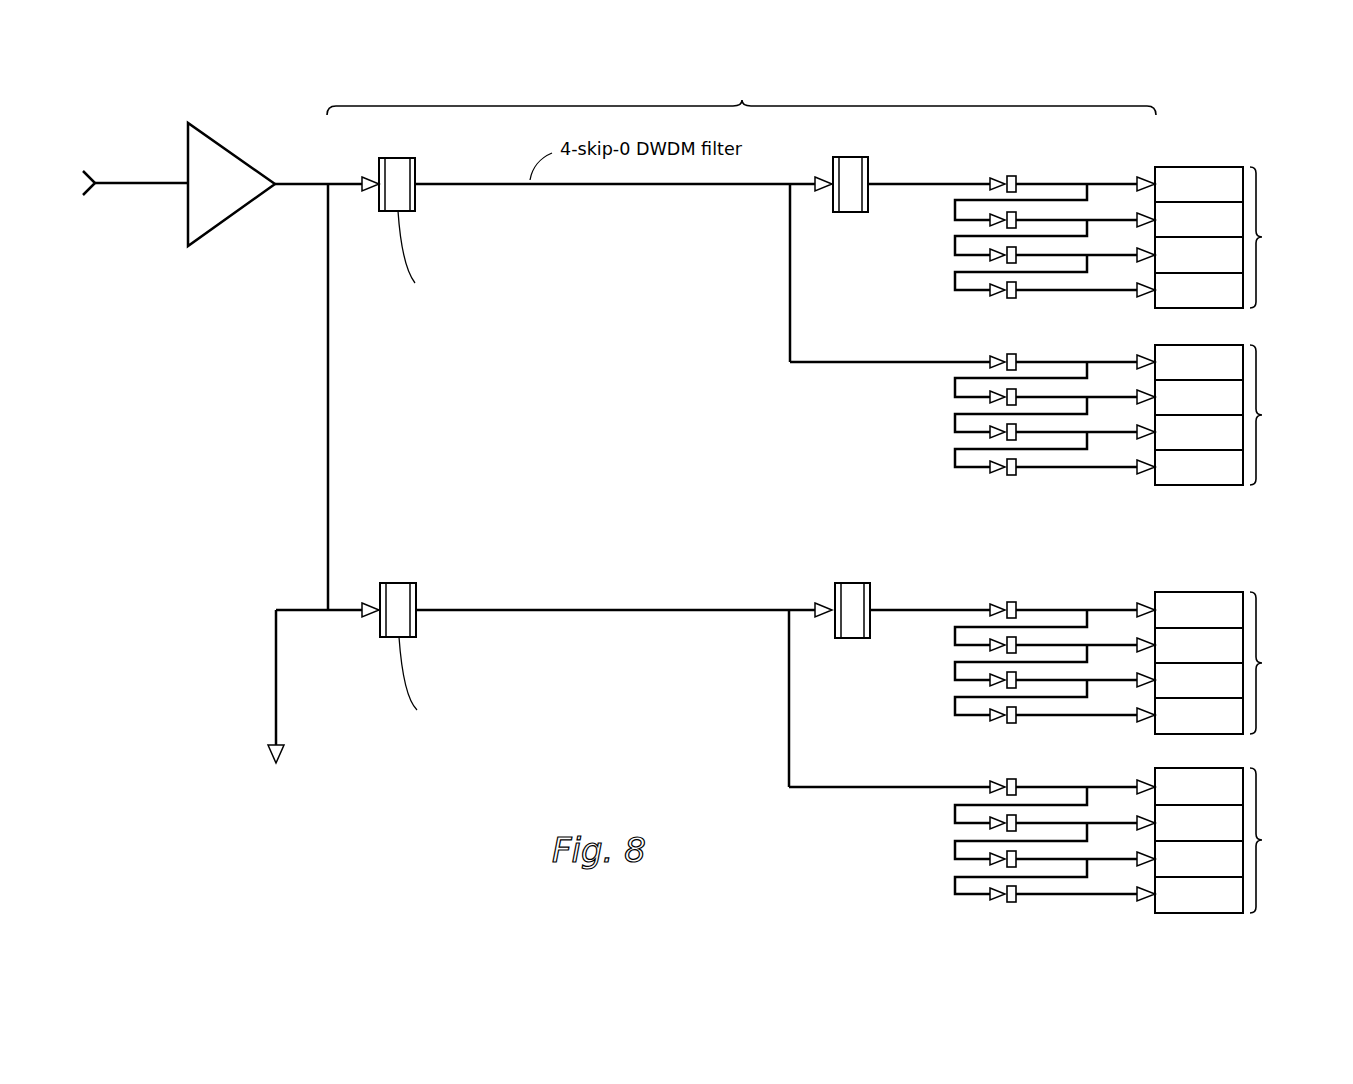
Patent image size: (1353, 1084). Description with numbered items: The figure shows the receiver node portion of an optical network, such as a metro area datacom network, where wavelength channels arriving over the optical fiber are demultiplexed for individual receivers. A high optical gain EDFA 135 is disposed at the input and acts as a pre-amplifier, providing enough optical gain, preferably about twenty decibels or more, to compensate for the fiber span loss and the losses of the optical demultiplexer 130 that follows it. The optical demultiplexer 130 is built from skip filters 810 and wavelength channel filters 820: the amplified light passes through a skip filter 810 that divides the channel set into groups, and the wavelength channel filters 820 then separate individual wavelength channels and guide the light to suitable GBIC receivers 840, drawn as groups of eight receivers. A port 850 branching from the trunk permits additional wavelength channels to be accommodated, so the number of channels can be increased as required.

The optical demultiplexer 130 is at (741, 95).
The high optical gain EDFA 135 is at (233, 153).
The skip filter 810 is at (398, 158).
The wavelength channel filter 820 is at (1011, 176).
The GBIC receiver 840 is at (1223, 540).
The port 850 is at (276, 733).